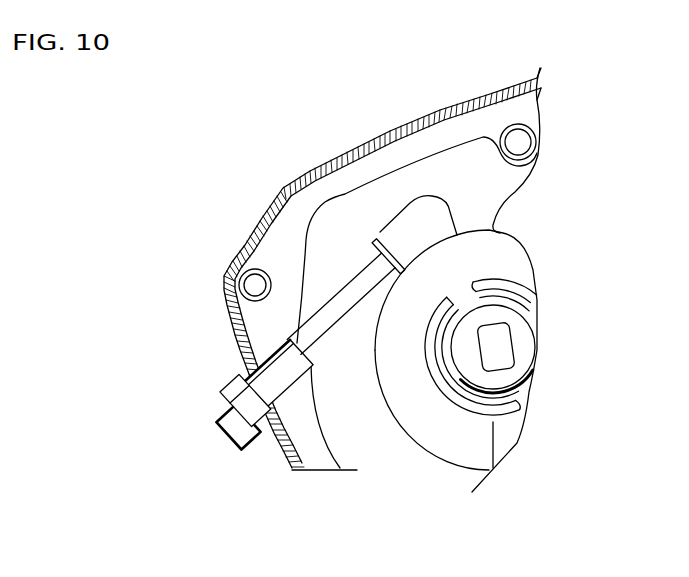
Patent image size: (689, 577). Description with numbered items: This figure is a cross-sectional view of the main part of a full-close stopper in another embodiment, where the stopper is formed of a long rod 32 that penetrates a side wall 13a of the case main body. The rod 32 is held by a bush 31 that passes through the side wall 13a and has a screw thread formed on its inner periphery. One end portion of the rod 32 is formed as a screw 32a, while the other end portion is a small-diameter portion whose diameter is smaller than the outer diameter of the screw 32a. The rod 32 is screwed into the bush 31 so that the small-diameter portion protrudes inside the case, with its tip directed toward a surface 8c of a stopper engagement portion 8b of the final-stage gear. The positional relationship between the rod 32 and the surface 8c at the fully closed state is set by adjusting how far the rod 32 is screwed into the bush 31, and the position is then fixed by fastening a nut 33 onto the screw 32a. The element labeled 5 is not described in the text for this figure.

The shaft 5 is at (498, 345).
The stopper engagement portion 8b is at (412, 222).
The surface 8c is at (375, 258).
The side wall 13a is at (233, 324).
The bush 31 is at (238, 371).
The rod 32 is at (333, 323).
The screw 32a is at (237, 446).
The nut 33 is at (271, 437).